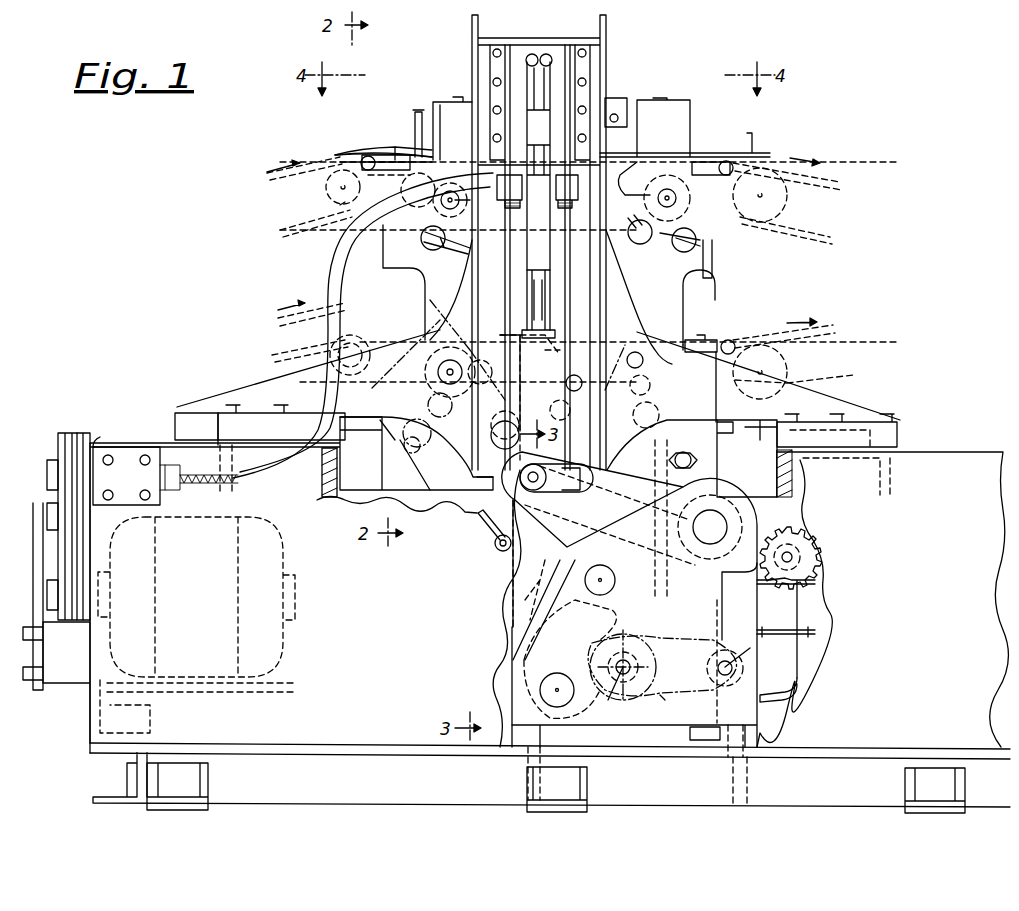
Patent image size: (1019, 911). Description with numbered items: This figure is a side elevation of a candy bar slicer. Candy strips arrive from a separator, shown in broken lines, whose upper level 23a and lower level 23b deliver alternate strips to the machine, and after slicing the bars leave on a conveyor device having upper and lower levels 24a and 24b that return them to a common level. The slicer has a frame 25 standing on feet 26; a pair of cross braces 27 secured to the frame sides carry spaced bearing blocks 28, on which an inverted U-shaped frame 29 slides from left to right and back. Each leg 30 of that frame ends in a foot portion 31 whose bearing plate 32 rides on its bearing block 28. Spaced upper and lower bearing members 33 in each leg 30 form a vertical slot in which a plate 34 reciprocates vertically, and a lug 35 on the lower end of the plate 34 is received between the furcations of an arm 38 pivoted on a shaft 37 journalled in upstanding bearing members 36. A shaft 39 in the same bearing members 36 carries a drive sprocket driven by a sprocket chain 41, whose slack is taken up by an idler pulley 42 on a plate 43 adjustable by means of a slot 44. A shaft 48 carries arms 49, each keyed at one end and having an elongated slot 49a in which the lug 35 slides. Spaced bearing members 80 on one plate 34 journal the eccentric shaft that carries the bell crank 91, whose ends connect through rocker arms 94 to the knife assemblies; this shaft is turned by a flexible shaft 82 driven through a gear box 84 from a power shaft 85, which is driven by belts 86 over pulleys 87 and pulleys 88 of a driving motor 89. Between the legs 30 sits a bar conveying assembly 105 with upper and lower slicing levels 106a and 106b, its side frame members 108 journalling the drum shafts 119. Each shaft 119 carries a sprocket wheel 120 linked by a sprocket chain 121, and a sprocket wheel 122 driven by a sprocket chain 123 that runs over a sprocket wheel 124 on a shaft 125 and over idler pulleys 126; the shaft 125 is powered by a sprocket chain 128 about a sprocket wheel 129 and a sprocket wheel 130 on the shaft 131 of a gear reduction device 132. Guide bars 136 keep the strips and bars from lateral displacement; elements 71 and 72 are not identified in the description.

The upper level of separator 23a is at (270, 195).
The lower level of separator 23b is at (312, 308).
The upper level of conveyor device 24a is at (840, 172).
The lower level of conveyor device 24b is at (840, 333).
The frame 25 is at (942, 458).
The feet 26 is at (190, 782).
The cross braces 27 is at (322, 490).
The bearing blocks 28 is at (260, 415).
The inverted U-shaped frame 29 is at (607, 65).
The leg 30 is at (612, 292).
The foot portion 31 is at (275, 385).
The bearing plate 32 is at (178, 420).
The bearing members 33 is at (578, 98).
The plate 34 is at (510, 95).
The lug 35 is at (537, 492).
The upstanding bearing member 36 is at (760, 725).
The shaft 37 is at (540, 690).
The arm 38 is at (515, 640).
The shaft 39 is at (610, 572).
The sprocket chain 41 is at (810, 585).
The idler pulley 42 is at (812, 554).
The plate 43 is at (790, 622).
The slot 44 is at (800, 680).
The shaft 48 is at (720, 525).
The arm 49 is at (650, 490).
The elongated slot 49a is at (580, 500).
The link 71 is at (482, 520).
The link pin 72 is at (498, 550).
The bearing members 80 is at (516, 212).
The flexible shaft 82 is at (346, 244).
The gear box 84 is at (120, 450).
The power shaft 85 is at (92, 450).
The belts 86 is at (58, 497).
The pulleys 87 is at (58, 445).
The pulleys 88 is at (68, 628).
The driving motor 89 is at (285, 633).
The bell crank 91 is at (538, 255).
The rocker arms 94 is at (538, 60).
The bar conveying assembly 105 is at (722, 265).
The upper slicing level 106a is at (430, 158).
The lower slicing level 106b is at (502, 338).
The side frame members 108 is at (420, 298).
The shaft 119 is at (420, 395).
The sprocket wheel 120 is at (455, 180).
The sprocket chain 121 is at (426, 247).
The sprocket wheel 122 is at (678, 350).
The sprocket chain 123 is at (532, 628).
The sprocket wheel 124 is at (623, 645).
The shaft 125 is at (612, 700).
The idler pulleys 126 is at (519, 418).
The sprocket chain 128 is at (663, 700).
The sprocket wheel 129 is at (650, 668).
The sprocket wheel 130 is at (745, 667).
The shaft 131 is at (752, 652).
The gear reduction device 132 is at (715, 714).
The guide bars 136 is at (356, 155).